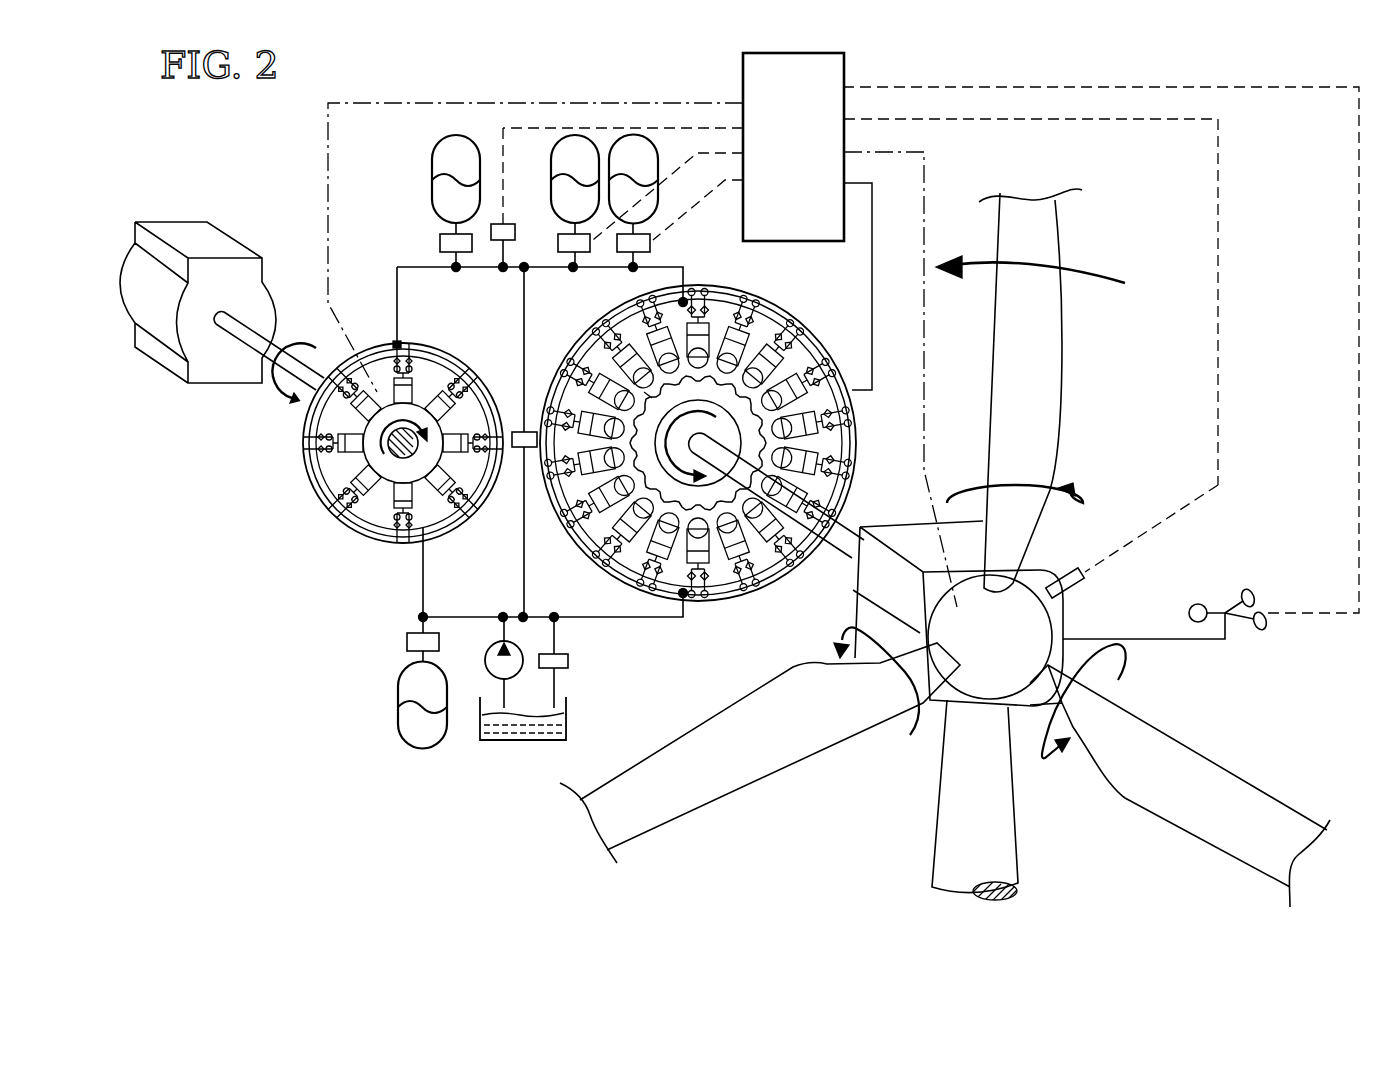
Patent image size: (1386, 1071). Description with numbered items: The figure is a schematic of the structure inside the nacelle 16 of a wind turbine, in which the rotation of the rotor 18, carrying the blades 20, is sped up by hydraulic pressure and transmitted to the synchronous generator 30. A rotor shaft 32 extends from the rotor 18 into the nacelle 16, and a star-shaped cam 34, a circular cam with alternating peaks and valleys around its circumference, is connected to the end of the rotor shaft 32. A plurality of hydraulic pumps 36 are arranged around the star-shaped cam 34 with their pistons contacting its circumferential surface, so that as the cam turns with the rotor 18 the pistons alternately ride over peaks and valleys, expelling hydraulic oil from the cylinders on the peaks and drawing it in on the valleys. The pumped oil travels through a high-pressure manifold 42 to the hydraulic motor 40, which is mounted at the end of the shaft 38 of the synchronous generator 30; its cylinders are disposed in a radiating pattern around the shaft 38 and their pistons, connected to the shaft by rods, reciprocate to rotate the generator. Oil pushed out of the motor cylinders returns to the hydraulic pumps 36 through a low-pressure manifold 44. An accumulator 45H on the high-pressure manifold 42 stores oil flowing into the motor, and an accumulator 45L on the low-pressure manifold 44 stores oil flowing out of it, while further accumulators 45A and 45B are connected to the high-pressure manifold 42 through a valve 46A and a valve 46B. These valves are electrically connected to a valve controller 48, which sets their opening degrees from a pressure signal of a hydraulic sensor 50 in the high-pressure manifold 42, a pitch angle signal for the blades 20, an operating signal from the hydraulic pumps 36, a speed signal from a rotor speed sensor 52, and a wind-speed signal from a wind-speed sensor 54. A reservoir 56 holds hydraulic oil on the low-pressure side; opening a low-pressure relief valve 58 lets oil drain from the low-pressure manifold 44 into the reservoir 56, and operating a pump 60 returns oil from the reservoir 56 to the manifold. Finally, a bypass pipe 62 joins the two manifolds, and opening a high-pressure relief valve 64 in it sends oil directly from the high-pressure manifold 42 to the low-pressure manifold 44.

The nacelle 16 is at (867, 600).
The rotor 18 is at (990, 687).
The blades 20 is at (1213, 773).
The synchronous generator 30 is at (182, 226).
The rotor shaft 32 is at (842, 523).
The star-shaped cam 34 is at (640, 395).
The hydraulic pumps 36 is at (755, 332).
The shaft 38 is at (247, 330).
The hydraulic motor 40 is at (343, 530).
The high-pressure manifold 42 is at (487, 270).
The low-pressure manifold 44 is at (466, 614).
The accumulator 45A is at (567, 137).
The accumulator 45B is at (630, 137).
The accumulator 45H is at (432, 187).
The accumulator 45L is at (398, 707).
The valve 46A is at (560, 253).
The valve 46B is at (623, 253).
The valve controller 48 is at (845, 67).
The hydraulic sensor 50 is at (507, 223).
The rotor speed sensor 52 is at (1082, 583).
The wind-speed sensor 54 is at (1215, 606).
The reservoir 56 is at (567, 727).
The low-pressure relief valve 58 is at (568, 660).
The pump 60 is at (485, 670).
The bypass pipe 62 is at (523, 343).
The high-pressure relief valve 64 is at (513, 449).